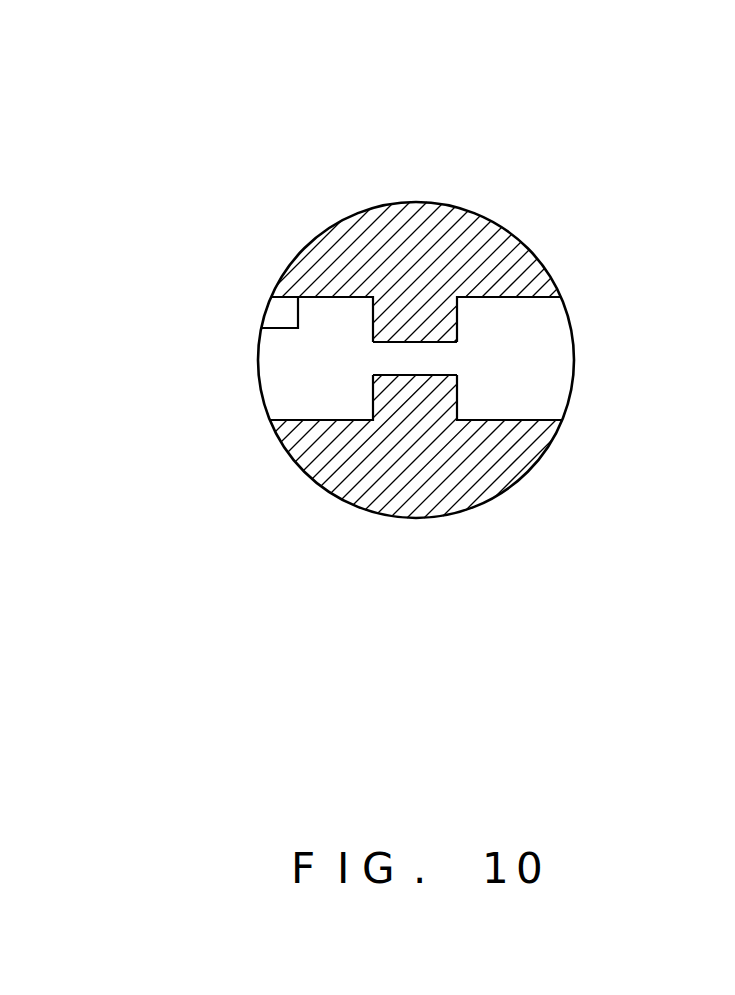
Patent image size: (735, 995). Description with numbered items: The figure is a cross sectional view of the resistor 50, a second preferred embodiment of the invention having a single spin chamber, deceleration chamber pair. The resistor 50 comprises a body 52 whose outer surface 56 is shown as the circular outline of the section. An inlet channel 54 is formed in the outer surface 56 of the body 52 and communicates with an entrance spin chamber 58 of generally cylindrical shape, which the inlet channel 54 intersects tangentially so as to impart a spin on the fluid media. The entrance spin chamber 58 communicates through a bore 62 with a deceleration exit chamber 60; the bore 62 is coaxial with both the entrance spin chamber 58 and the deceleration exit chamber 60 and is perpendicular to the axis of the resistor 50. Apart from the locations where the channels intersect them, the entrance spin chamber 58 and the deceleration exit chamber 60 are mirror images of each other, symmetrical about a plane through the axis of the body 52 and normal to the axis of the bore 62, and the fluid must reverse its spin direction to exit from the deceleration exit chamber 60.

The resistor 50 is at (510, 104).
The body 52 is at (460, 490).
The inlet channel 54 is at (277, 317).
The outer surface 56 is at (528, 240).
The entrance spin chamber 58 is at (283, 385).
The deceleration exit chamber 60 is at (542, 325).
The bore 62 is at (443, 362).